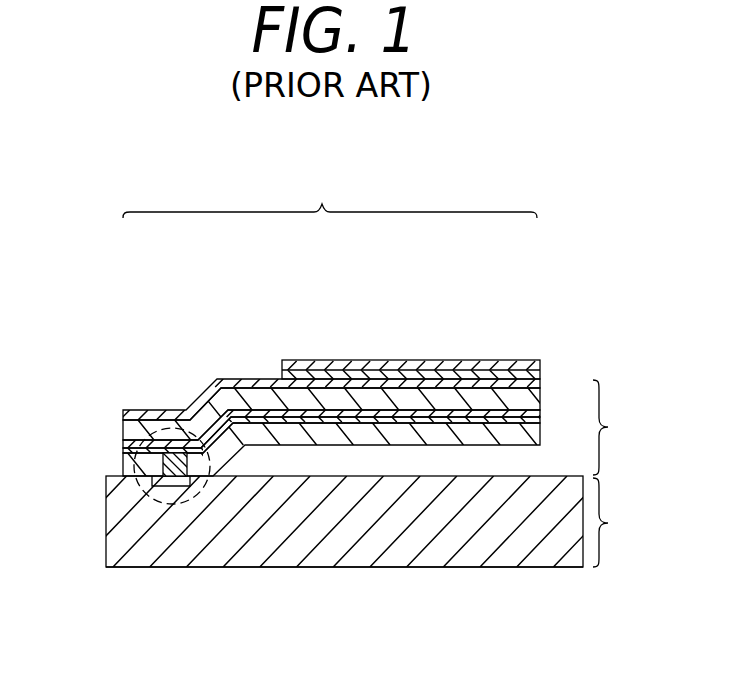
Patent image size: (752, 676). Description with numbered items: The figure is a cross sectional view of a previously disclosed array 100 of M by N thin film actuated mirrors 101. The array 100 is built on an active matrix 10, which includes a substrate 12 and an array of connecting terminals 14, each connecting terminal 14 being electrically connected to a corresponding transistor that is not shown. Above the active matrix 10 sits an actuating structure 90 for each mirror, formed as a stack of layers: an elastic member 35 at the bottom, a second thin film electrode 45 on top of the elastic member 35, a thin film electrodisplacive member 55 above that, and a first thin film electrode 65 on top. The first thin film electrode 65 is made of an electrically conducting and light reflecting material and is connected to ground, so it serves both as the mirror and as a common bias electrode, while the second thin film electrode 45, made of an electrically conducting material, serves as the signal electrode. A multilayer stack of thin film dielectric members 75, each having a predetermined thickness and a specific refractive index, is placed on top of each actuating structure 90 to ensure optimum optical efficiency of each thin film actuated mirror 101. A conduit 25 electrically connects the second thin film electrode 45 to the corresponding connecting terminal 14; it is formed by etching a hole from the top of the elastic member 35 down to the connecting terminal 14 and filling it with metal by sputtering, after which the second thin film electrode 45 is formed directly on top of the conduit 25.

The array of thin film actuated mirrors 100 is at (566, 148).
The thin film actuated mirror 101 is at (330, 192).
The active matrix 10 is at (348, 521).
The substrate 12 is at (317, 567).
The connecting terminal 14 is at (155, 486).
The conduit 25 is at (163, 463).
The elastic member 35 is at (417, 428).
The second thin film electrode 45 is at (271, 408).
The thin film electrodisplacive member 55 is at (347, 398).
The first thin film electrode 65 is at (229, 387).
The multilayer stack of thin film dielectric members 75 is at (468, 374).
The actuating structure 90 is at (356, 362).